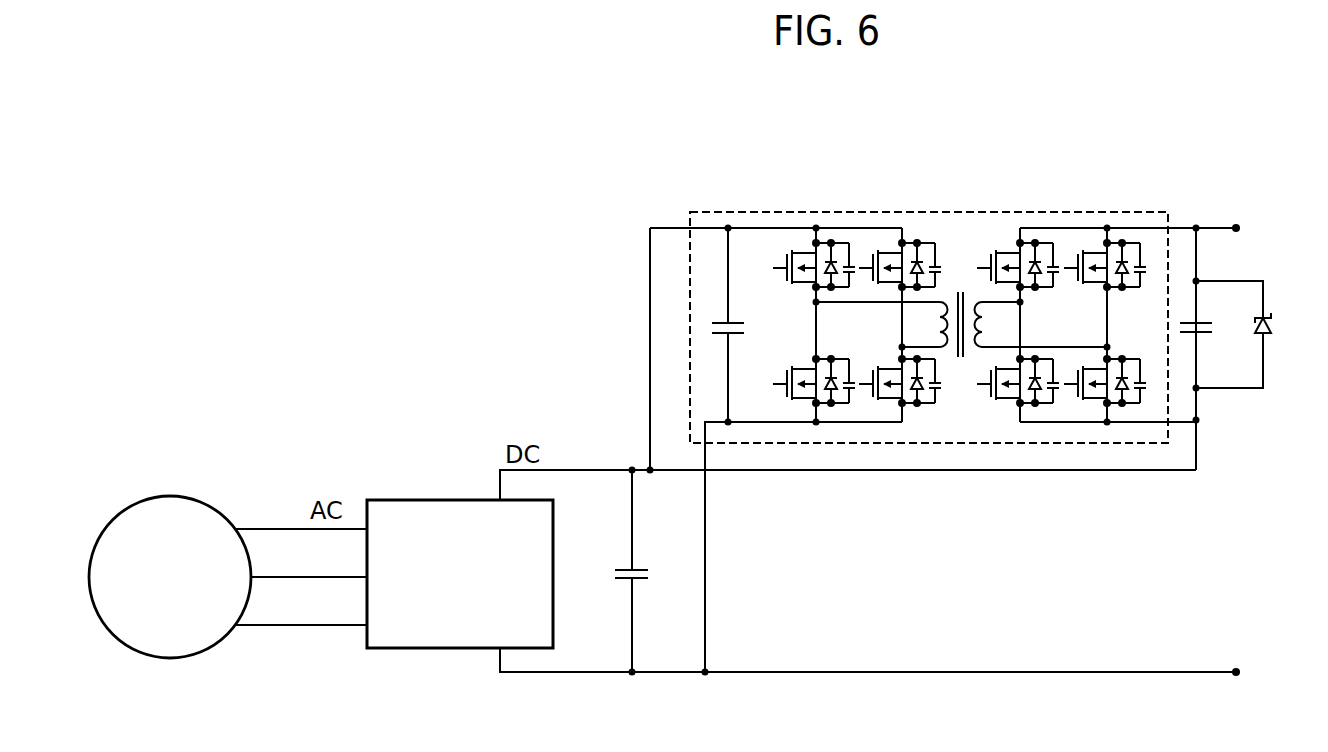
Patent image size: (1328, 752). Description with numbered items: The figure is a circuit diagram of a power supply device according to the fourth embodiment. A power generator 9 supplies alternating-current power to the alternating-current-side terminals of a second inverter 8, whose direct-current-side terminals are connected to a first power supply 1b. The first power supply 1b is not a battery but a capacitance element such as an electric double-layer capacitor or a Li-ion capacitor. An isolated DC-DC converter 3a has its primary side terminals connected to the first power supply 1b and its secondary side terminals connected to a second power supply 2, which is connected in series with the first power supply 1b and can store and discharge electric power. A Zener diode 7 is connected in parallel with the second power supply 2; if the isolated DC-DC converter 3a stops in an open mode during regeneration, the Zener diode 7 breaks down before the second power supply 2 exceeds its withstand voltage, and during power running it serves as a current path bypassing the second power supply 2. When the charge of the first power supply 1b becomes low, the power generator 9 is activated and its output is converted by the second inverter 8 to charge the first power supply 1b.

The power generator 9 is at (131, 650).
The second inverter 8 is at (445, 649).
The first power supply 1b is at (647, 570).
The isolated DC-DC converter 3a is at (722, 210).
The second power supply 2 is at (1212, 332).
The Zener diode 7 is at (1272, 317).